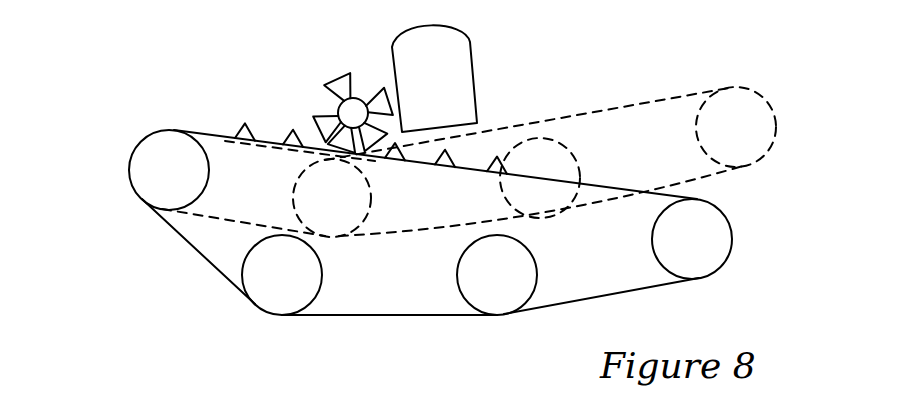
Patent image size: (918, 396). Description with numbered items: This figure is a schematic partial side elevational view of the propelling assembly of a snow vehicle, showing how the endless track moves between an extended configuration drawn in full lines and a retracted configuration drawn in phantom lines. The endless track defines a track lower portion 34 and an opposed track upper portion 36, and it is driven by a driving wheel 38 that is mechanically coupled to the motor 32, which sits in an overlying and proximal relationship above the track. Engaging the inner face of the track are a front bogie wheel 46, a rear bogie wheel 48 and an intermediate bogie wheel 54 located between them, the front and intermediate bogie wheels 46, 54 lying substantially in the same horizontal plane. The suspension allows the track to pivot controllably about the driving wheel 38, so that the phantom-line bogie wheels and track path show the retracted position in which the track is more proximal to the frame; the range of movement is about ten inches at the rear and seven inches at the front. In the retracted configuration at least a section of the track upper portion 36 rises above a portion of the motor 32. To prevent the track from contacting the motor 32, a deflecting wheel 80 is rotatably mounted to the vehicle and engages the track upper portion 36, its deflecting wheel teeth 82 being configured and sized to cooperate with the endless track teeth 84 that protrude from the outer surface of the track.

The motor 32 is at (455, 76).
The track lower portion 34 is at (542, 312).
The track upper portion 36 is at (688, 95).
The driving wheel 38 is at (131, 180).
The front bogie wheel 46 is at (258, 310).
The rear bogie wheel 48 is at (730, 248).
The intermediate bogie wheel 54 is at (482, 310).
The deflecting wheel 80 is at (324, 90).
The deflecting wheel teeth 82 is at (345, 112).
The endless track teeth 84 is at (242, 134).